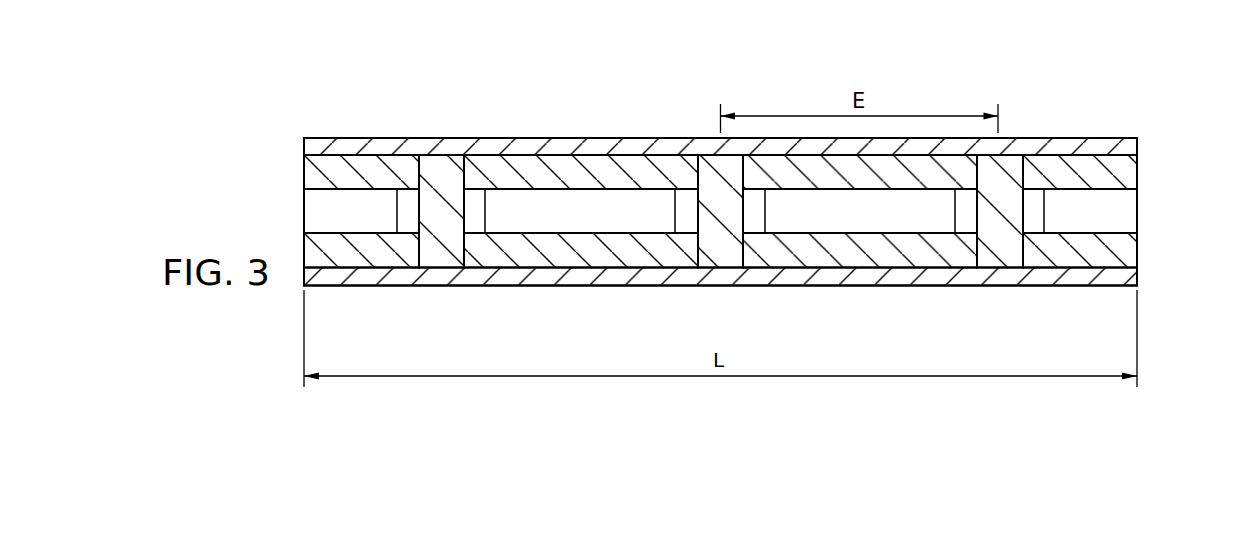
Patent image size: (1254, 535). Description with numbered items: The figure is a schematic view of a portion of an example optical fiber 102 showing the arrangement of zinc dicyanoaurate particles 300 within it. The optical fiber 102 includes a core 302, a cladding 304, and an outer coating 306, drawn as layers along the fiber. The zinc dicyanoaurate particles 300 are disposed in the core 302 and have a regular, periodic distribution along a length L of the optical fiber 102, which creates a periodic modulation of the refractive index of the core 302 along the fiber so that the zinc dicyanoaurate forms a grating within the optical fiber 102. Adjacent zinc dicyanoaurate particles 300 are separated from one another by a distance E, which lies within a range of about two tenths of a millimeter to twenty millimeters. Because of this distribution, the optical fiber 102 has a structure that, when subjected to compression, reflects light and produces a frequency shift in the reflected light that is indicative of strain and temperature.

The optical fiber 102 is at (641, 76).
The zinc dicyanoaurate particles 300 is at (439, 258).
The core 302 is at (1128, 212).
The cladding 304 is at (1128, 172).
The outer coating 306 is at (1128, 275).